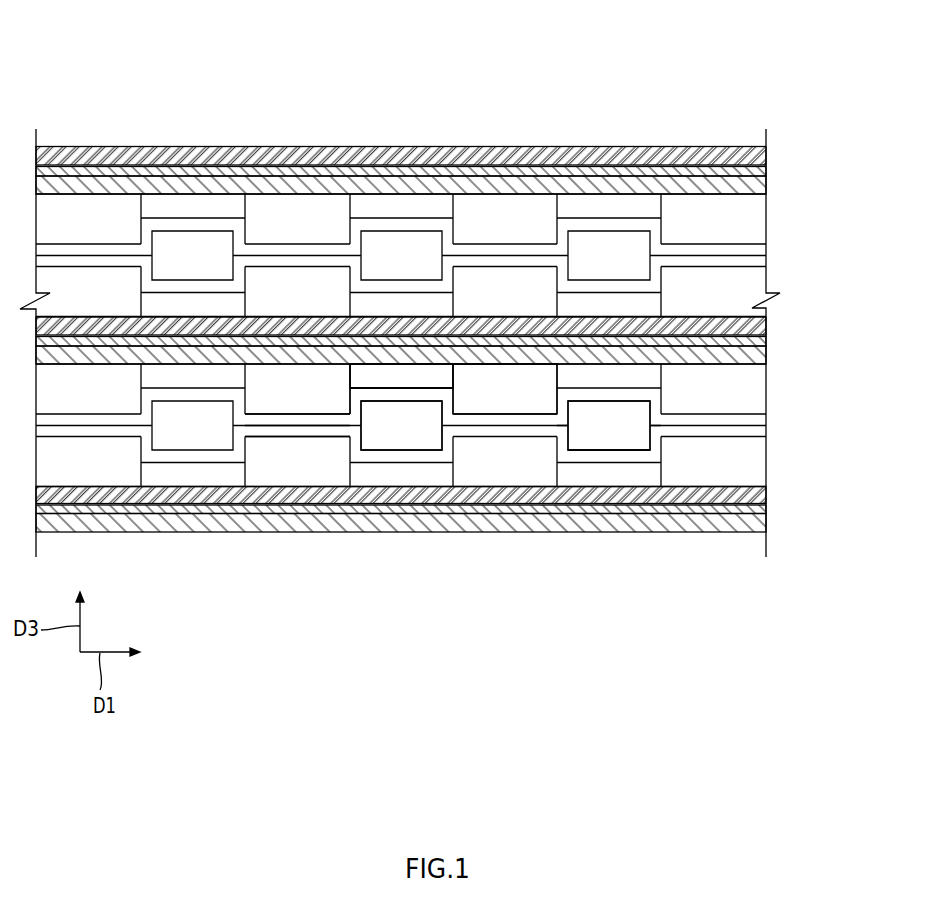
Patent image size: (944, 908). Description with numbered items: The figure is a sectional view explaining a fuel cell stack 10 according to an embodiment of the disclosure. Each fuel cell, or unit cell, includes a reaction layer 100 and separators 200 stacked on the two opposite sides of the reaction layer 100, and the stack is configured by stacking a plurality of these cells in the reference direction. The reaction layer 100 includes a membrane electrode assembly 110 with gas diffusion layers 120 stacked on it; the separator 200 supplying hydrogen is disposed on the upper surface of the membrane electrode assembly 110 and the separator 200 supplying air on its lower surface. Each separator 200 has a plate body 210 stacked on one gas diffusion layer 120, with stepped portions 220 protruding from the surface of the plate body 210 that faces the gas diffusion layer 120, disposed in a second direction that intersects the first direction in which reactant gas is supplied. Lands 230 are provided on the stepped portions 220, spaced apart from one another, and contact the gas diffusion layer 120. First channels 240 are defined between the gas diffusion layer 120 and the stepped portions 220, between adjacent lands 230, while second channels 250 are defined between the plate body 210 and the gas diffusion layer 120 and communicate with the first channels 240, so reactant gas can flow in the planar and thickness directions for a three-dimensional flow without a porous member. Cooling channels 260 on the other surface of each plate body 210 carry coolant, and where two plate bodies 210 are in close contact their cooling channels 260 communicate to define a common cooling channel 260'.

The fuel cell stack 10 is at (52, 50).
The reaction layer 100 is at (473, 340).
The membrane electrode assembly 110 is at (705, 356).
The gas diffusion layer 120 is at (738, 333).
The separator 200 is at (662, 228).
The plate body 210 is at (274, 418).
The stepped portion 220 is at (397, 392).
The land 230 is at (431, 374).
The first channel 240 is at (384, 374).
The second channel 250 is at (509, 390).
The cooling channel 260 is at (697, 438).
The common cooling channel 260' is at (609, 516).